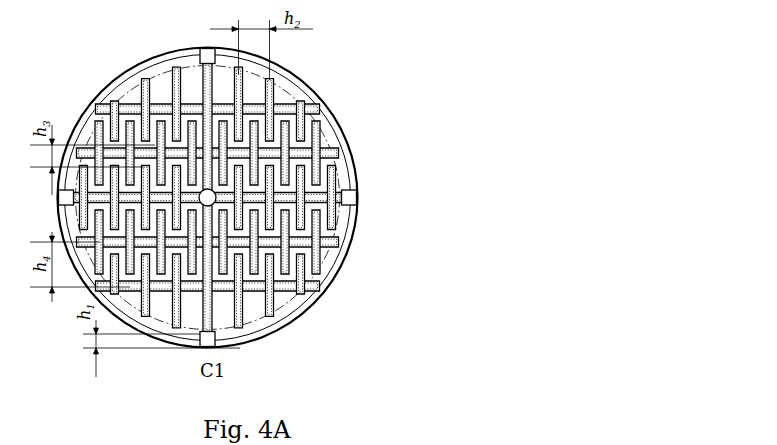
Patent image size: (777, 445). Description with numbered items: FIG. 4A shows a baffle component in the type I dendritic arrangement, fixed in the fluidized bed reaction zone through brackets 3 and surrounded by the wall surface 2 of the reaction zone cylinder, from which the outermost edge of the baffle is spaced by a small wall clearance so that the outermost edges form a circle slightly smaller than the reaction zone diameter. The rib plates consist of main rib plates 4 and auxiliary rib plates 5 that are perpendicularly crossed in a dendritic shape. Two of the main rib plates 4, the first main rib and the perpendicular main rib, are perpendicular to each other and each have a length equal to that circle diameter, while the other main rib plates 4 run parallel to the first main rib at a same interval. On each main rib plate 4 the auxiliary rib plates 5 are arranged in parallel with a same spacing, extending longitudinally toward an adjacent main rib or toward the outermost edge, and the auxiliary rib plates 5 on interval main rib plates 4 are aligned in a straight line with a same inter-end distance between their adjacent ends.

The wall surface 2 is at (347, 145).
The bracket 3 is at (354, 192).
The main rib plate 4 is at (296, 205).
The auxiliary rib plate 5 is at (332, 202).